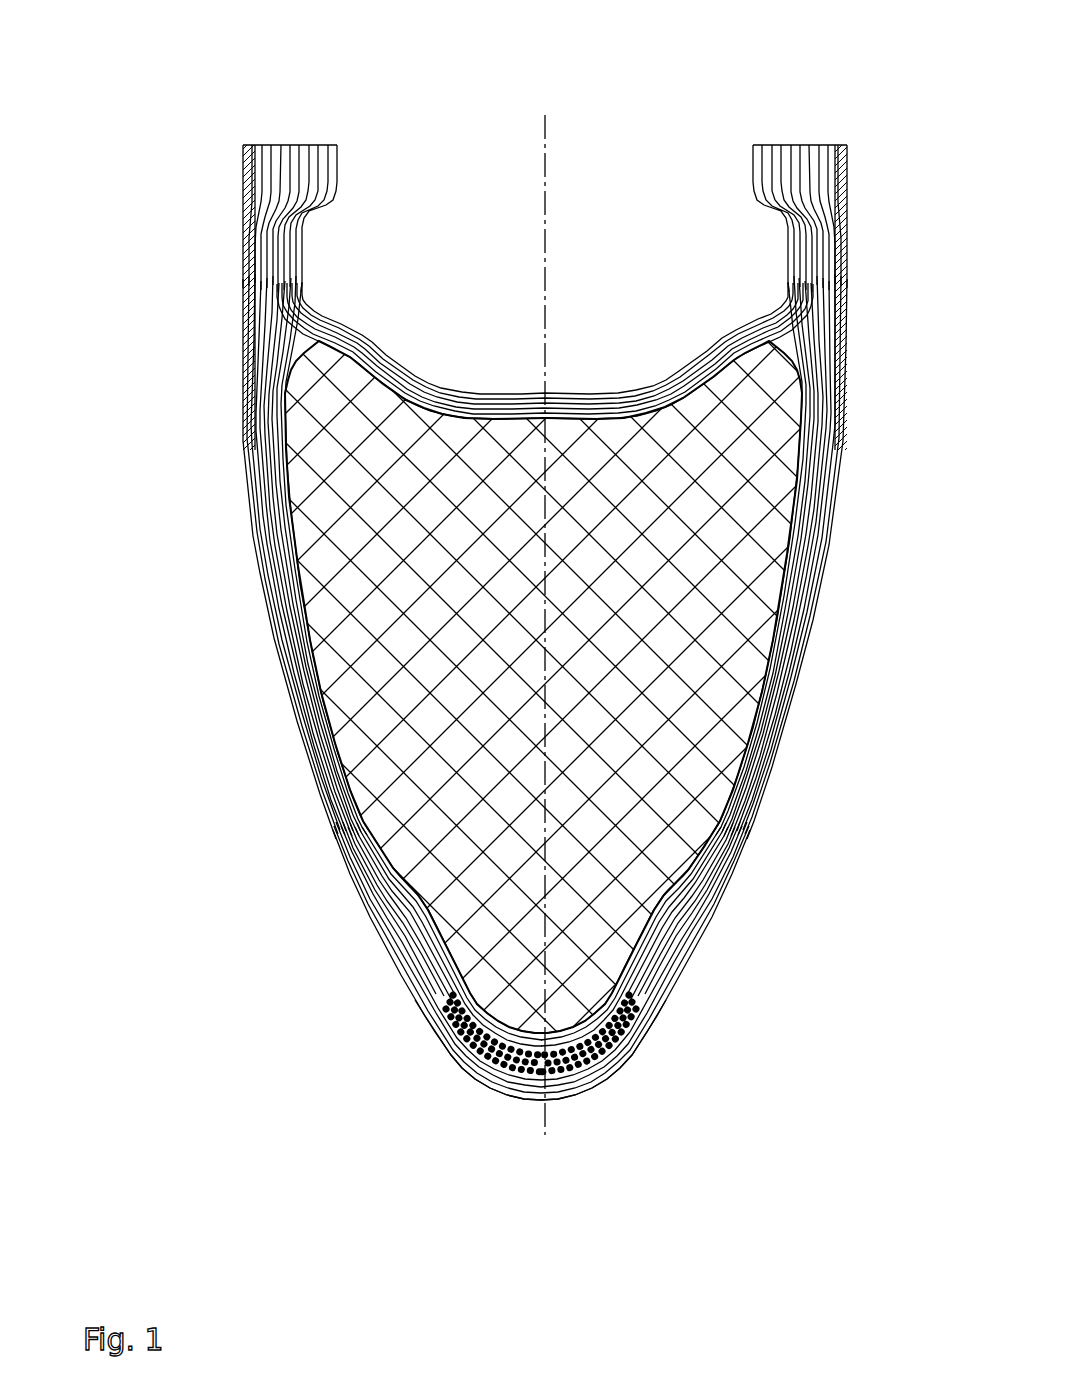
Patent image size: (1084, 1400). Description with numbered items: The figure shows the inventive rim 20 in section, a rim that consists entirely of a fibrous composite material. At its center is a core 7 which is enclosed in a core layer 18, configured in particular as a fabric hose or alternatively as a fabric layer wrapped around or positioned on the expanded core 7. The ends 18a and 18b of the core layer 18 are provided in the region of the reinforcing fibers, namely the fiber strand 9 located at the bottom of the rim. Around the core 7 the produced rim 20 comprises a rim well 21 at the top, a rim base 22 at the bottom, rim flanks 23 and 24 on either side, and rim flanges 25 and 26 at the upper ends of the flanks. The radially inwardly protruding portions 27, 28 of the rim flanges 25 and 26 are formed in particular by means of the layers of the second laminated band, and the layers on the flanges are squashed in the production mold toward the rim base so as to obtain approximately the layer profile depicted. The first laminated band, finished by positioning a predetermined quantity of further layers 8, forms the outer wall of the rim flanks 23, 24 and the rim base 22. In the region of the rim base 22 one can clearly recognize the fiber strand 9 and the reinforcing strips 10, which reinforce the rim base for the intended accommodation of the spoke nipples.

The rim 20 is at (515, 604).
The rim flange 25 is at (310, 236).
The rim flange 26 is at (762, 237).
The radially inwardly protruding portion 27 is at (331, 133).
The radially inwardly protruding portion 28 is at (757, 140).
The rim well 21 is at (577, 378).
The core layer 18 is at (300, 345).
The core 7 is at (320, 462).
The rim flank 23 is at (238, 556).
The rim flank 24 is at (842, 620).
The further layers 8 is at (280, 712).
The reinforcing strips 10 is at (392, 884).
The end of the core layer 18a is at (446, 1008).
The end of the core layer 18b is at (632, 1012).
The fiber strand 9 is at (578, 1092).
The rim base 22 is at (518, 1101).